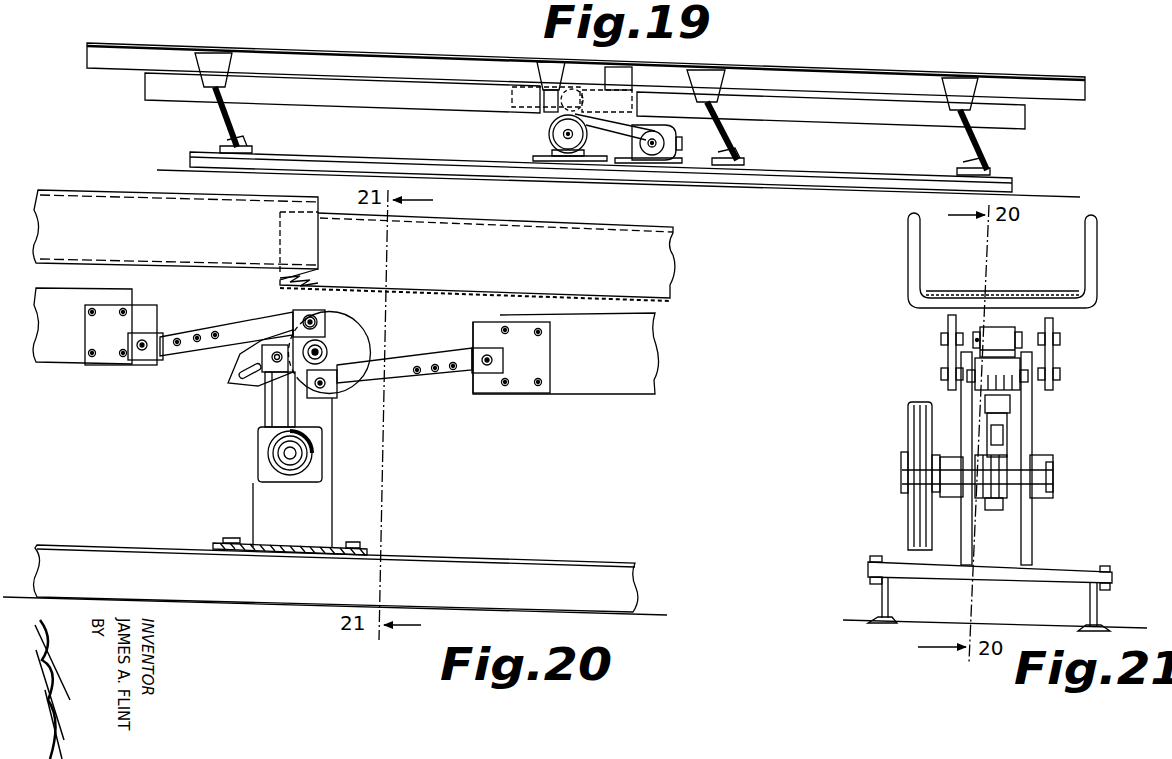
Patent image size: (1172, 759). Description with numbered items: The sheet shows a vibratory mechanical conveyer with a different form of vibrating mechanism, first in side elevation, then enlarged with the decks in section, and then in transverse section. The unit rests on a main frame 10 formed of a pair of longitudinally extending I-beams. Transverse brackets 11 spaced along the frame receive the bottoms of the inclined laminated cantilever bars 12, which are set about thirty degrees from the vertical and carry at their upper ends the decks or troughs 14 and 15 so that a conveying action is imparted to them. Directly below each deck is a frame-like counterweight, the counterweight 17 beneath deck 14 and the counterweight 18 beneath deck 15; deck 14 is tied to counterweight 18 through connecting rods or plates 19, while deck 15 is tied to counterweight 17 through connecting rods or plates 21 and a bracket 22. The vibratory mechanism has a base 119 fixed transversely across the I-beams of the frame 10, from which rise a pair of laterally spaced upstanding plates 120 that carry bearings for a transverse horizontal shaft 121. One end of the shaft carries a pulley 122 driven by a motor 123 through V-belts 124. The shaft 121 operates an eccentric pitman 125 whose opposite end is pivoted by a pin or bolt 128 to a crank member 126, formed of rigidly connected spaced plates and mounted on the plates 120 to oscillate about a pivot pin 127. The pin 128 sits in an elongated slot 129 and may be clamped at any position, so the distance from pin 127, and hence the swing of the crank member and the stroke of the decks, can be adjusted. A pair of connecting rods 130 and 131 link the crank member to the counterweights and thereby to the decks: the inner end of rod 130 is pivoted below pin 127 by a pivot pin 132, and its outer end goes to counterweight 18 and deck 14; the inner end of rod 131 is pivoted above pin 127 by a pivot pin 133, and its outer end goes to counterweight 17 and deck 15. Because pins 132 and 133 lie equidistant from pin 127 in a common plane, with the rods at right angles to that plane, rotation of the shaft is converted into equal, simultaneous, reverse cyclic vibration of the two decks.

In FIG. 19, the main frame 10 is at (792, 198).
In FIG. 20, the main frame 10 is at (594, 556).
In FIG. 21, the main frame 10 is at (1080, 562).
In FIG. 19, the transverse brackets 11 is at (245, 152).
In FIG. 19, the outside cantilever bars 12 is at (222, 122).
In FIG. 19, the deck 14 is at (340, 60).
In FIG. 20, the deck 14 is at (175, 231).
In FIG. 21, the deck 14 is at (1012, 288).
In FIG. 19, the deck 15 is at (825, 80).
In FIG. 20, the deck 15 is at (540, 248).
In FIG. 21, the deck 15 is at (1085, 287).
In FIG. 19, the counterweight 17 is at (342, 93).
In FIG. 20, the counterweight 17 is at (95, 326).
In FIG. 21, the counterweight 17 is at (950, 317).
In FIG. 19, the counterweight 18 is at (831, 110).
In FIG. 20, the counterweight 18 is at (566, 353).
In FIG. 19, the connecting rods 19 is at (610, 98).
In FIG. 19, the connecting rods 21 is at (522, 90).
In FIG. 19, the bracket 22 is at (618, 78).
In FIG. 20, the base 119 is at (335, 548).
In FIG. 21, the base 119 is at (1042, 570).
In FIG. 20, the upstanding plates 120 is at (292, 472).
In FIG. 21, the upstanding plates 120 is at (963, 412).
In FIG. 20, the horizontal shaft 121 is at (318, 450).
In FIG. 21, the horizontal shaft 121 is at (1013, 477).
In FIG. 19, the pulley 122 is at (553, 150).
In FIG. 21, the pulley 122 is at (908, 430).
In FIG. 19, the motor 123 is at (680, 167).
In FIG. 19, the V-belts 124 is at (602, 160).
In FIG. 20, the pitman 125 is at (280, 407).
In FIG. 21, the pitman 125 is at (997, 443).
In FIG. 20, the crank member 126 is at (350, 343).
In FIG. 21, the crank member 126 is at (980, 363).
In FIG. 20, the pivot pin 127 is at (326, 344).
In FIG. 21, the pivot pin 127 is at (1038, 370).
In FIG. 20, the pivot pin 128 is at (277, 370).
In FIG. 20, the elongated slot 129 is at (266, 358).
In FIG. 20, the connecting rod 130 is at (393, 377).
In FIG. 21, the connecting rod 130 is at (1013, 402).
In FIG. 20, the connecting rod 131 is at (240, 327).
In FIG. 21, the connecting rod 131 is at (997, 337).
In FIG. 20, the pivot pin 132 is at (326, 380).
In FIG. 21, the pivot pin 132 is at (973, 403).
In FIG. 20, the pivot pin 133 is at (313, 318).
In FIG. 21, the pivot pin 133 is at (978, 337).